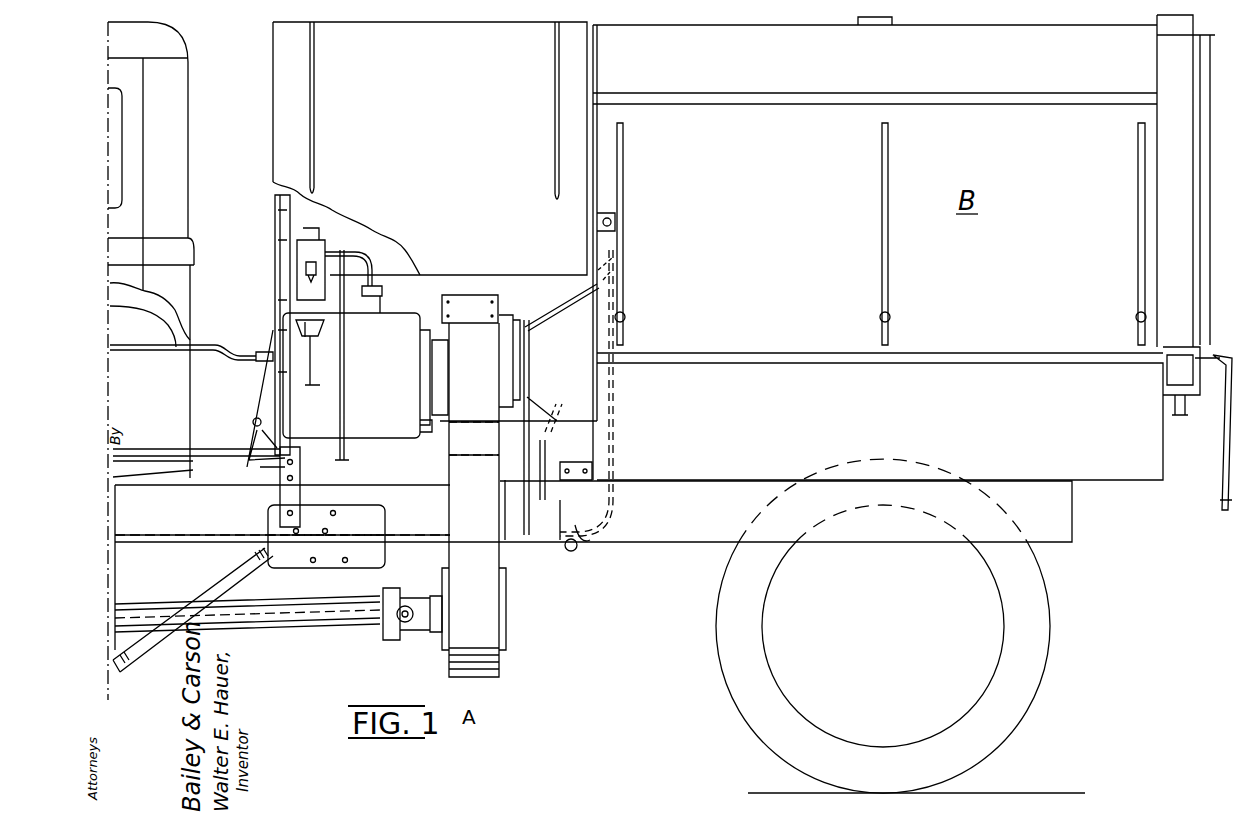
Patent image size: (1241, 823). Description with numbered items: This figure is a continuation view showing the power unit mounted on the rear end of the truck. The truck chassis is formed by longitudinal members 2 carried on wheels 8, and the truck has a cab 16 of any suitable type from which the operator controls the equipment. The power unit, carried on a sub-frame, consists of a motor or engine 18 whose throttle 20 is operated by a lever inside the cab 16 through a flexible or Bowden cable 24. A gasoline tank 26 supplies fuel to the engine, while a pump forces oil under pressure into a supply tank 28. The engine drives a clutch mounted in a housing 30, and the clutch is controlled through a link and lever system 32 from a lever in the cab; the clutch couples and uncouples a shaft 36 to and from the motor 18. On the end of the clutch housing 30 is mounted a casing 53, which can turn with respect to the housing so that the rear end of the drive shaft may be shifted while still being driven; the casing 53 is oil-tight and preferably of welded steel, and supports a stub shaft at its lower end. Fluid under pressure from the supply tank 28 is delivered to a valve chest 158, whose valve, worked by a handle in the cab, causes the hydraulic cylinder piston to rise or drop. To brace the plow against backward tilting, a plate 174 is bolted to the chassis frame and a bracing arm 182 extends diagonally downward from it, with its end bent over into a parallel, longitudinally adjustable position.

The longitudinal members 2 is at (705, 545).
The wheels 8 is at (898, 626).
The cab 16 is at (176, 140).
The motor or engine 18 is at (835, 344).
The throttle 20 is at (626, 256).
The flexible or Bowden cable 24 is at (616, 441).
The gasoline tank 26 is at (272, 152).
The supply tank 28 is at (399, 324).
The clutch housing 30 is at (551, 323).
The link and lever system 32 is at (250, 441).
The shaft 36 is at (426, 372).
The casing 53 is at (487, 565).
The valve chest 158 is at (300, 272).
The plate 174 is at (268, 513).
The bracing arm 182 is at (205, 575).